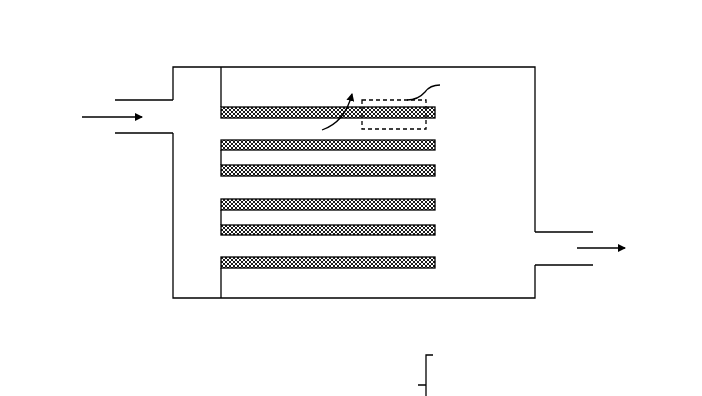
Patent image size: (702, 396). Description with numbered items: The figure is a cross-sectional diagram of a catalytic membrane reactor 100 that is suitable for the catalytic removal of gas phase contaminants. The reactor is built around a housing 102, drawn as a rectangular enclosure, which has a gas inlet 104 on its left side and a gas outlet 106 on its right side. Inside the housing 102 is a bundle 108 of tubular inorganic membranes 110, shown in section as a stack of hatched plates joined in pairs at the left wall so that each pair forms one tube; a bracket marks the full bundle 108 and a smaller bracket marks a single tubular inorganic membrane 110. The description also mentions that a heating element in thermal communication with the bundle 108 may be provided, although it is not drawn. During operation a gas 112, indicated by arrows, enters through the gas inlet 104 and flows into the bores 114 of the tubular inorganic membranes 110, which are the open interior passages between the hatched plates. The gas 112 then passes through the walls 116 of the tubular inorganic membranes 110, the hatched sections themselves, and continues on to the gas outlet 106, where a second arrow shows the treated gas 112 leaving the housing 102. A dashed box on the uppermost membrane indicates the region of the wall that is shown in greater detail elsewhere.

The catalytic membrane reactor 100 is at (137, 62).
The housing 102 is at (285, 298).
The gas inlet 104 is at (160, 133).
The gas outlet 106 is at (562, 267).
The bundle of tubular inorganic membranes 108 is at (443, 110).
The tubular inorganic membrane 110 is at (463, 109).
The gas 112 is at (107, 117).
The bore 114 is at (272, 139).
The wall 116 is at (380, 268).